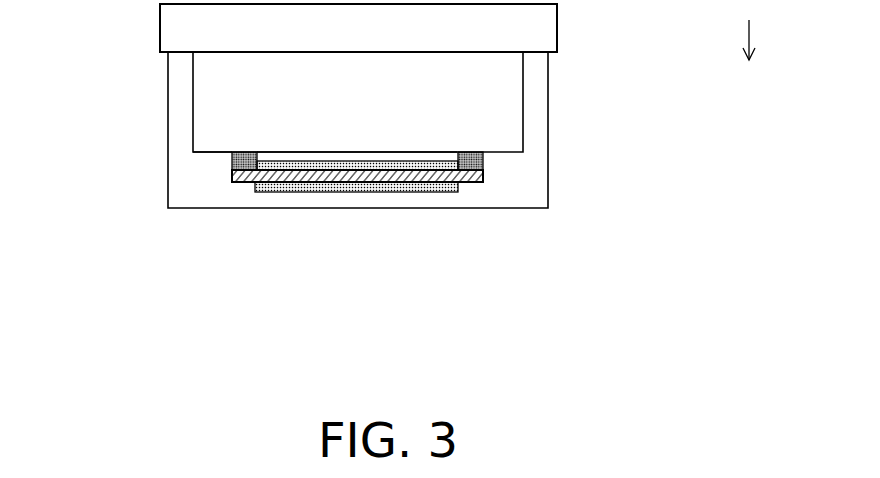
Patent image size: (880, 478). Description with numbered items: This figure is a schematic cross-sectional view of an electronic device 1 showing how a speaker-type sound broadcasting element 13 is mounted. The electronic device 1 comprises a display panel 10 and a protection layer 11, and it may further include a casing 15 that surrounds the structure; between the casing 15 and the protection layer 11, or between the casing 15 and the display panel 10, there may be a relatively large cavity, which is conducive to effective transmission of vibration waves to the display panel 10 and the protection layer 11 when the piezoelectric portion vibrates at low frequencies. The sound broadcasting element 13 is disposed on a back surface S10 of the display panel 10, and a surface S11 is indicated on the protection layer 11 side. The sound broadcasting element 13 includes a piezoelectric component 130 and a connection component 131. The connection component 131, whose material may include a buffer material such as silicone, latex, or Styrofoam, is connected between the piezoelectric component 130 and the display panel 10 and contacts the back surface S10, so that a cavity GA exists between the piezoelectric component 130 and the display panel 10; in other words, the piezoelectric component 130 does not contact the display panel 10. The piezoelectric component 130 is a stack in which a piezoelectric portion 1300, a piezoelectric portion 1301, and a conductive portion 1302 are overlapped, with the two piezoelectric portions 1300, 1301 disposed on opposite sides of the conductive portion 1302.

The electronic device 1 is at (584, 300).
The display panel 10 is at (212, 107).
The protection layer 11 is at (172, 28).
The sound broadcasting element 13 is at (372, 243).
The piezoelectric component 130 is at (357, 226).
The piezoelectric portion 1300 is at (390, 177).
The piezoelectric portion 1301 is at (450, 247).
The conductive portion 1302 is at (357, 167).
The connection component 131 is at (476, 160).
The casing 15 is at (548, 193).
The back surface S10 is at (203, 153).
The bottom surface of cover plate S11 is at (161, 55).
The cavity GA is at (443, 153).